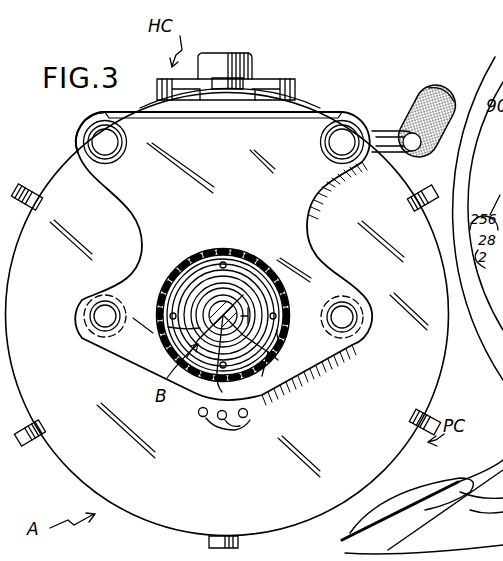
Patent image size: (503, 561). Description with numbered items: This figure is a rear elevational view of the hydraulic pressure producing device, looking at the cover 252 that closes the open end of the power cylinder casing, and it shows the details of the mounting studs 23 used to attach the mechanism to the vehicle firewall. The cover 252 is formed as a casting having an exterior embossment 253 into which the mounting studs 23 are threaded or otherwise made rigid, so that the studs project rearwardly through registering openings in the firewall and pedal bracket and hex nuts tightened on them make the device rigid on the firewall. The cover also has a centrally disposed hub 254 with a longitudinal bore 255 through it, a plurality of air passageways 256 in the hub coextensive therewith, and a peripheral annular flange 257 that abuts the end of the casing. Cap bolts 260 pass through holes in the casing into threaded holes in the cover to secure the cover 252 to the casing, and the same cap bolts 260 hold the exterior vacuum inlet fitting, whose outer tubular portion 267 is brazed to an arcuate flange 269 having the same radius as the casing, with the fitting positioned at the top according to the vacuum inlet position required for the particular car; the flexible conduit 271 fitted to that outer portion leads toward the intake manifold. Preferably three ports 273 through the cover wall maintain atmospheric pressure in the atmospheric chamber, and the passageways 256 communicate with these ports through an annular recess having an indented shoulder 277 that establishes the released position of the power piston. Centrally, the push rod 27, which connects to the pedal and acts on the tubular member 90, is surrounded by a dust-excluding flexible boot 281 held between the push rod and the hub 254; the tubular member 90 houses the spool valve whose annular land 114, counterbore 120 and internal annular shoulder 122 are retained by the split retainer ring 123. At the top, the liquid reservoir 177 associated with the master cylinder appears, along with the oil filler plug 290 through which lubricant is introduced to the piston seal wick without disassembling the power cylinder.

The mounting studs 23 is at (105, 142).
The push rod 27 is at (226, 387).
The tubular member 90 is at (261, 373).
The annular land 114 is at (170, 336).
The counterbore 120 is at (198, 318).
The internal annular shoulder 122 is at (291, 362).
The split retainer ring 123 is at (252, 286).
The liquid reservoir 177 is at (160, 97).
The cover 252 is at (72, 455).
The exterior embossment 253 is at (128, 205).
The hub 254 is at (175, 310).
The longitudinal bore 255 is at (277, 330).
The air passageways 256 is at (217, 258).
The peripheral annular flange 257 is at (78, 150).
The cap bolts 260 is at (243, 80).
The outer tubular portion 267 is at (372, 130).
The arcuate flange 269 is at (304, 100).
The flexible conduit 271 is at (426, 92).
The ports 273 is at (248, 418).
The indented shoulder 277 is at (492, 72).
The flexible boot 281 is at (243, 295).
The oil filler plug 290 is at (218, 66).